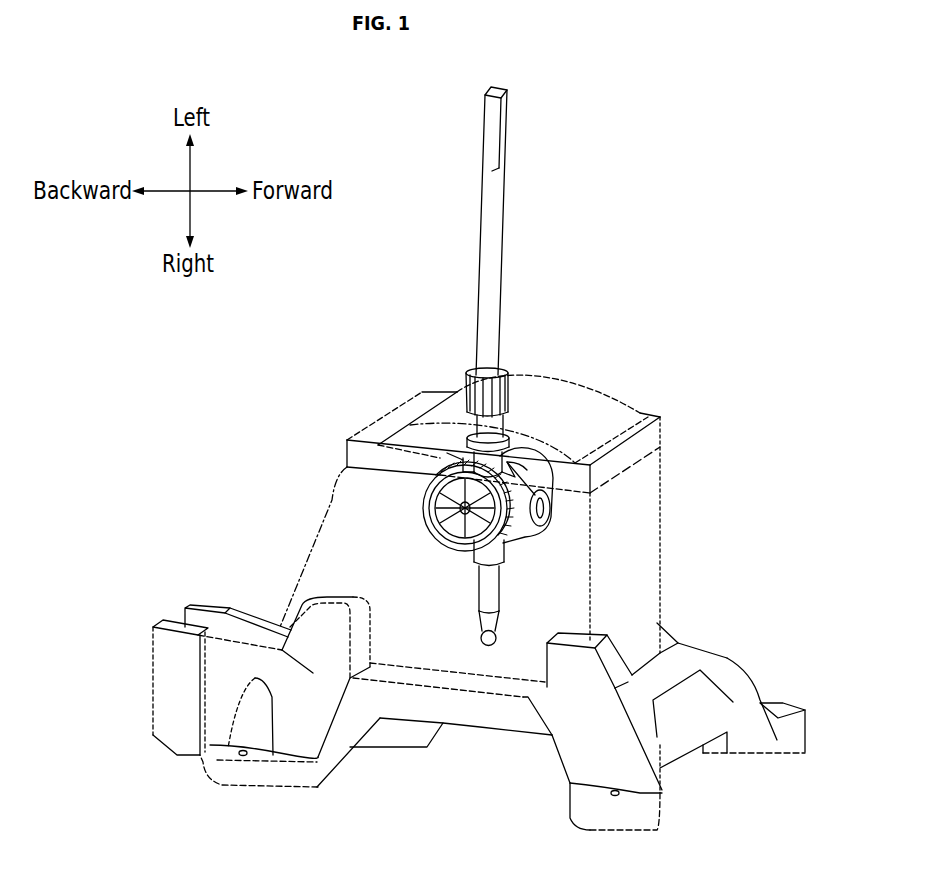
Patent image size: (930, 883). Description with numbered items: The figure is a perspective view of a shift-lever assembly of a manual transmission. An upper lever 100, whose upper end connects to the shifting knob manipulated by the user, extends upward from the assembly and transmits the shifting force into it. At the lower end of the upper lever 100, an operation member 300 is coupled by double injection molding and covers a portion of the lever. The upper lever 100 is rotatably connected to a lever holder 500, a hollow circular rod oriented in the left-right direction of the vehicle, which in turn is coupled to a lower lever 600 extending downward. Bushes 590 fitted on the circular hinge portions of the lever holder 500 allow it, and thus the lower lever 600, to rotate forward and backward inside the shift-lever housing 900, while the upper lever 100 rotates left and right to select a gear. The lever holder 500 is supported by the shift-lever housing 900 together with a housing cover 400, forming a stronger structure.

The upper lever 100 is at (494, 232).
The operation member 300 is at (514, 389).
The housing cover 400 is at (410, 405).
The lever holder 500 is at (556, 445).
The bush 590 is at (517, 530).
The lower lever 600 is at (487, 590).
The shift-lever housing 900 is at (700, 627).